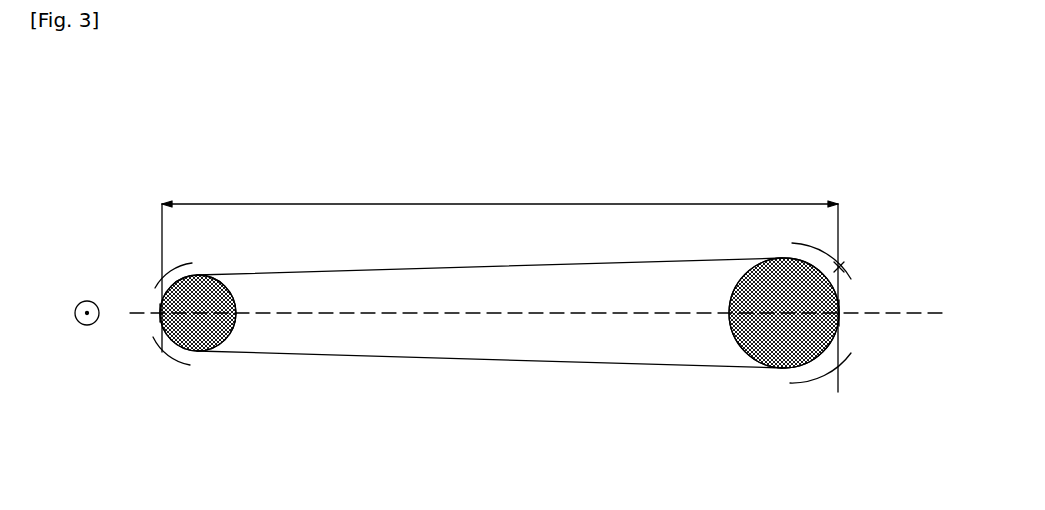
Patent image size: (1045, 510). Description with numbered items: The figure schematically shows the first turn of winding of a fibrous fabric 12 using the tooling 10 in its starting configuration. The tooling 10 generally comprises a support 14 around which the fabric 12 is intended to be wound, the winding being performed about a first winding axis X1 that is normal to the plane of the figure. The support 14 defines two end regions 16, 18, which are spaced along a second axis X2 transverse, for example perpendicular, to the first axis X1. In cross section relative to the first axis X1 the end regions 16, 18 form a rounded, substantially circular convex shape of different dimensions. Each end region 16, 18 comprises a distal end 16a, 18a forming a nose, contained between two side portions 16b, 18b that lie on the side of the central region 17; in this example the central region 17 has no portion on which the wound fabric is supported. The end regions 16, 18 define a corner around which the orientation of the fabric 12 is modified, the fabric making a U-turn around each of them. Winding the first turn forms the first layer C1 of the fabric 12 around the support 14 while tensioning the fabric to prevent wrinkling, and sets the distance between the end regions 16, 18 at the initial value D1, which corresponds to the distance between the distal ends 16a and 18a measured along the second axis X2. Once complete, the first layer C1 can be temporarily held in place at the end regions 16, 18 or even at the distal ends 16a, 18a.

The tooling 10 is at (180, 136).
The fabric 12 is at (303, 271).
The support 14 is at (842, 266).
The end region 16 is at (178, 302).
The distal end 16a is at (158, 320).
The side portions 16b is at (168, 277).
The central region 17 is at (492, 375).
The end region 18 is at (812, 307).
The distal end 18a is at (840, 318).
The side portions 18b is at (830, 262).
The first layer C1 is at (358, 271).
The initial value D1 is at (500, 287).
The first winding axis X1 is at (77, 325).
The second axis X2 is at (933, 320).